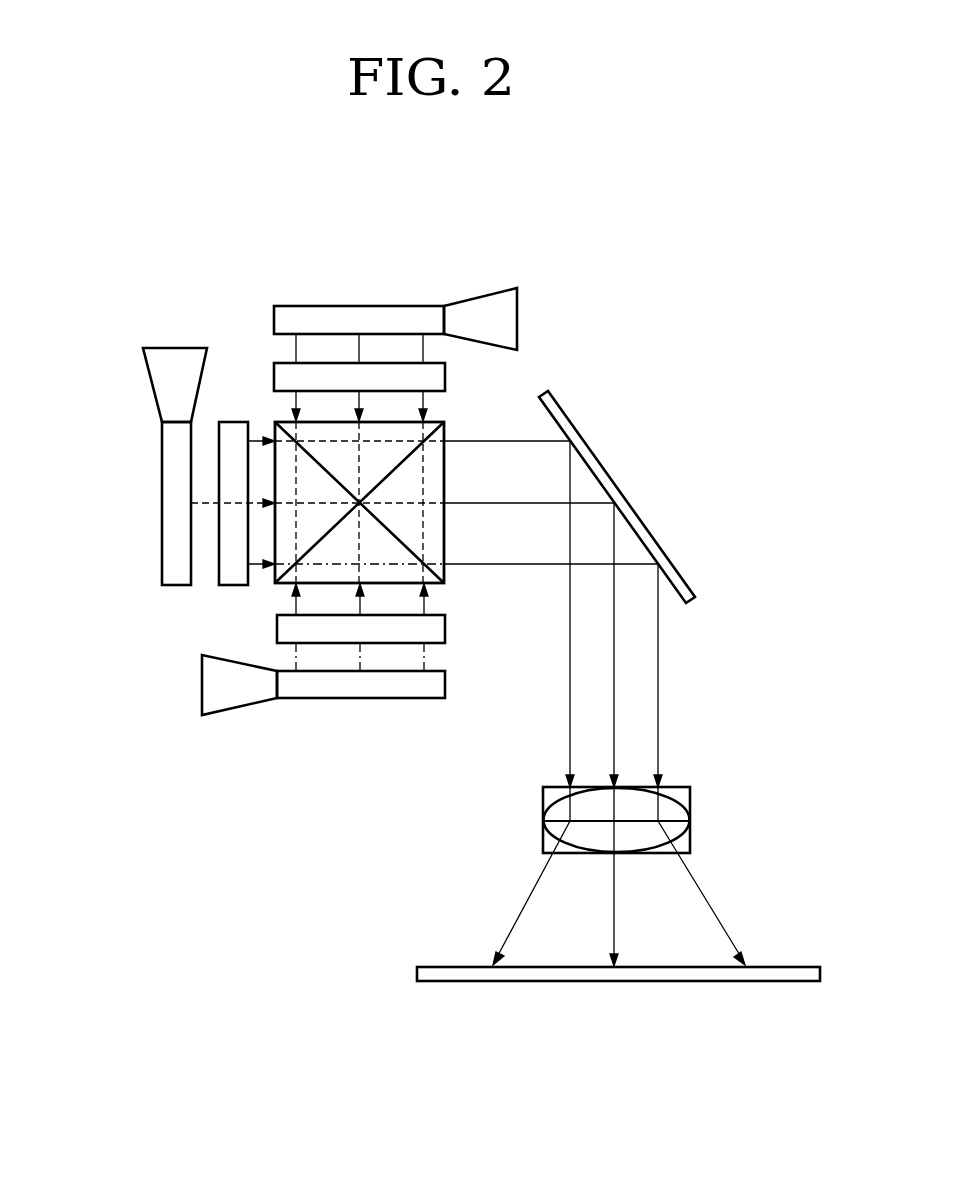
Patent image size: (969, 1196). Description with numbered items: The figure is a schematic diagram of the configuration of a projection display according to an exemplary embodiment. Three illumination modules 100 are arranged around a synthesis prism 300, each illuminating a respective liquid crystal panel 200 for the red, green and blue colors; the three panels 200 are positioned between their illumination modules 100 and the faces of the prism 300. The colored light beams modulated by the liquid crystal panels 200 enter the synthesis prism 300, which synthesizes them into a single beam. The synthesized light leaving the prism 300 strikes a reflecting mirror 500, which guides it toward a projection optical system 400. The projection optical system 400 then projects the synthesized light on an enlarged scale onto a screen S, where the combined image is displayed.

The illumination module 100 is at (428, 298).
The liquid crystal panel 200 is at (237, 421).
The synthesis prism 300 is at (447, 575).
The projection optical system 400 is at (691, 797).
The reflecting mirror 500 is at (688, 578).
The screen S is at (803, 966).